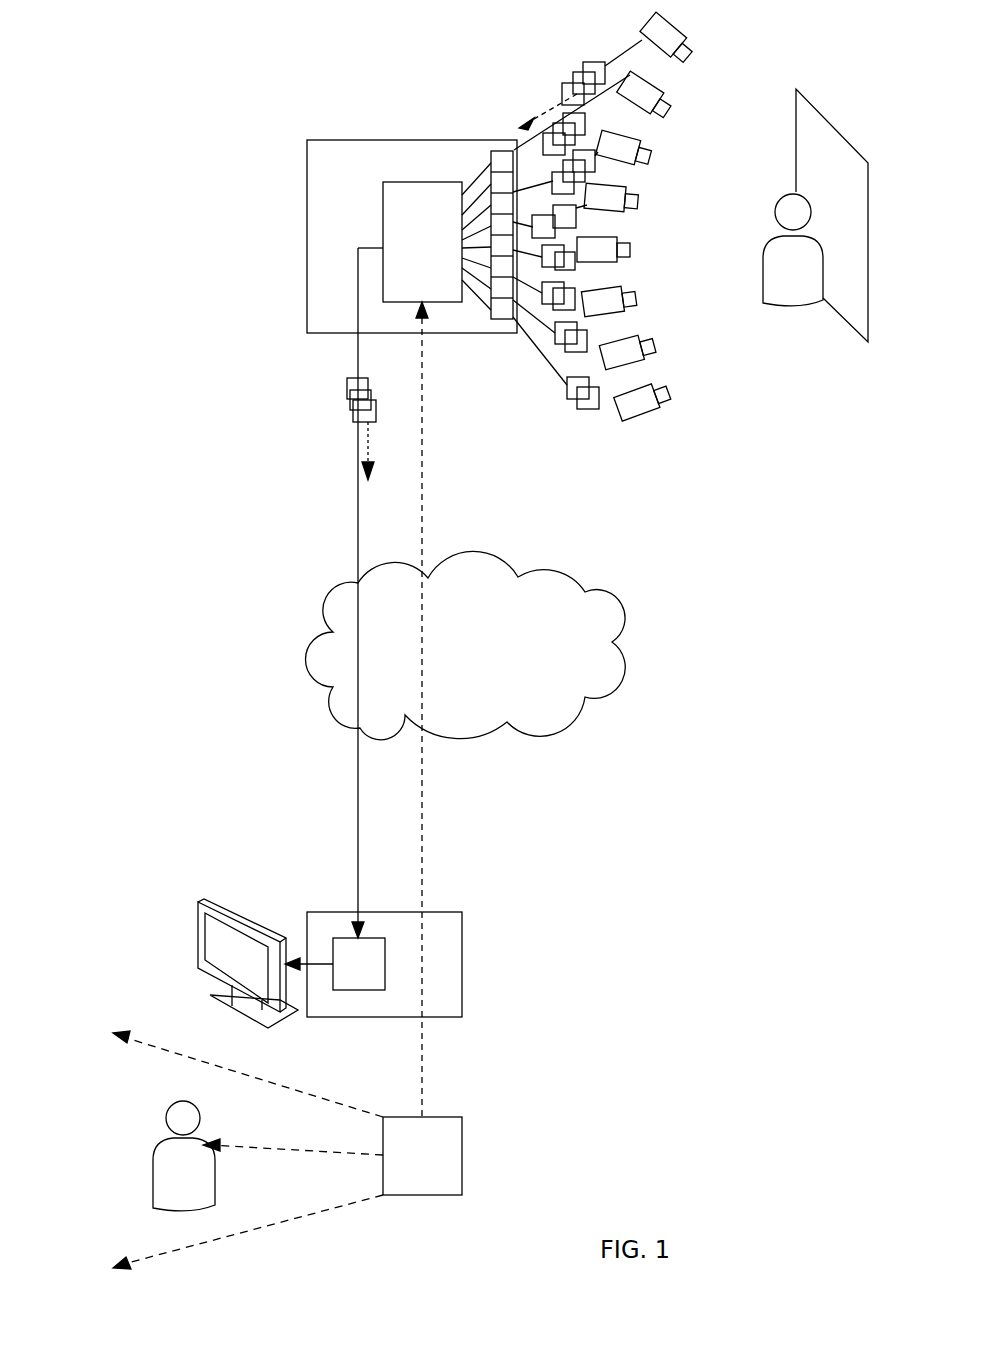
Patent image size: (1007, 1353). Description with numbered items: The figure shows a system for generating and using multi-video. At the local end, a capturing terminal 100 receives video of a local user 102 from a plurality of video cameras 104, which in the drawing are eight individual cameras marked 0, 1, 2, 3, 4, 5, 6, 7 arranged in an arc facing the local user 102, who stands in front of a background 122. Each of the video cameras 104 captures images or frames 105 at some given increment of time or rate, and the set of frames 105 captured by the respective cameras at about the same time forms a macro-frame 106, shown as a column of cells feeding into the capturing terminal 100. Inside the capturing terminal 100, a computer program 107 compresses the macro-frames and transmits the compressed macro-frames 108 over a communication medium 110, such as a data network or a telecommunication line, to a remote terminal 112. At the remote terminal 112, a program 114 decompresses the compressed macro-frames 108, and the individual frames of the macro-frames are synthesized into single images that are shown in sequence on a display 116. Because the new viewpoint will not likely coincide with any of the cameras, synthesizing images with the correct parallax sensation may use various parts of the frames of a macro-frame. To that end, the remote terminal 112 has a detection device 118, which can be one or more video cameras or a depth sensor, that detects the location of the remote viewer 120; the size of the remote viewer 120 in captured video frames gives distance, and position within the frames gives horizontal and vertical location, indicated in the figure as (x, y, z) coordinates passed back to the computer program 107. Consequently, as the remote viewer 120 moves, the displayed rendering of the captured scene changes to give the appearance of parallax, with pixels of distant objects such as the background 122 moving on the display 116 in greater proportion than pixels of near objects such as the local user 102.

The capturing terminal 100 is at (337, 133).
The local user 102 is at (811, 336).
The video cameras 104 is at (705, 216).
The frames 105 is at (583, 68).
The macro-frame 106 is at (502, 150).
The computer program 107 is at (440, 252).
The compressed macro-frames 108 is at (345, 396).
The communication medium 110 is at (609, 566).
The remote terminal 112 is at (506, 936).
The program 114 is at (376, 972).
The display 116 is at (256, 968).
The detection device 118 is at (439, 1166).
The remote viewer 120 is at (157, 1121).
The background 122 is at (843, 320).
The camera 0 is at (668, 44).
The camera 1 is at (645, 102).
The camera 2 is at (623, 157).
The camera 3 is at (610, 207).
The camera 4 is at (602, 259).
The camera 5 is at (608, 311).
The camera 6 is at (627, 362).
The camera 7 is at (642, 412).